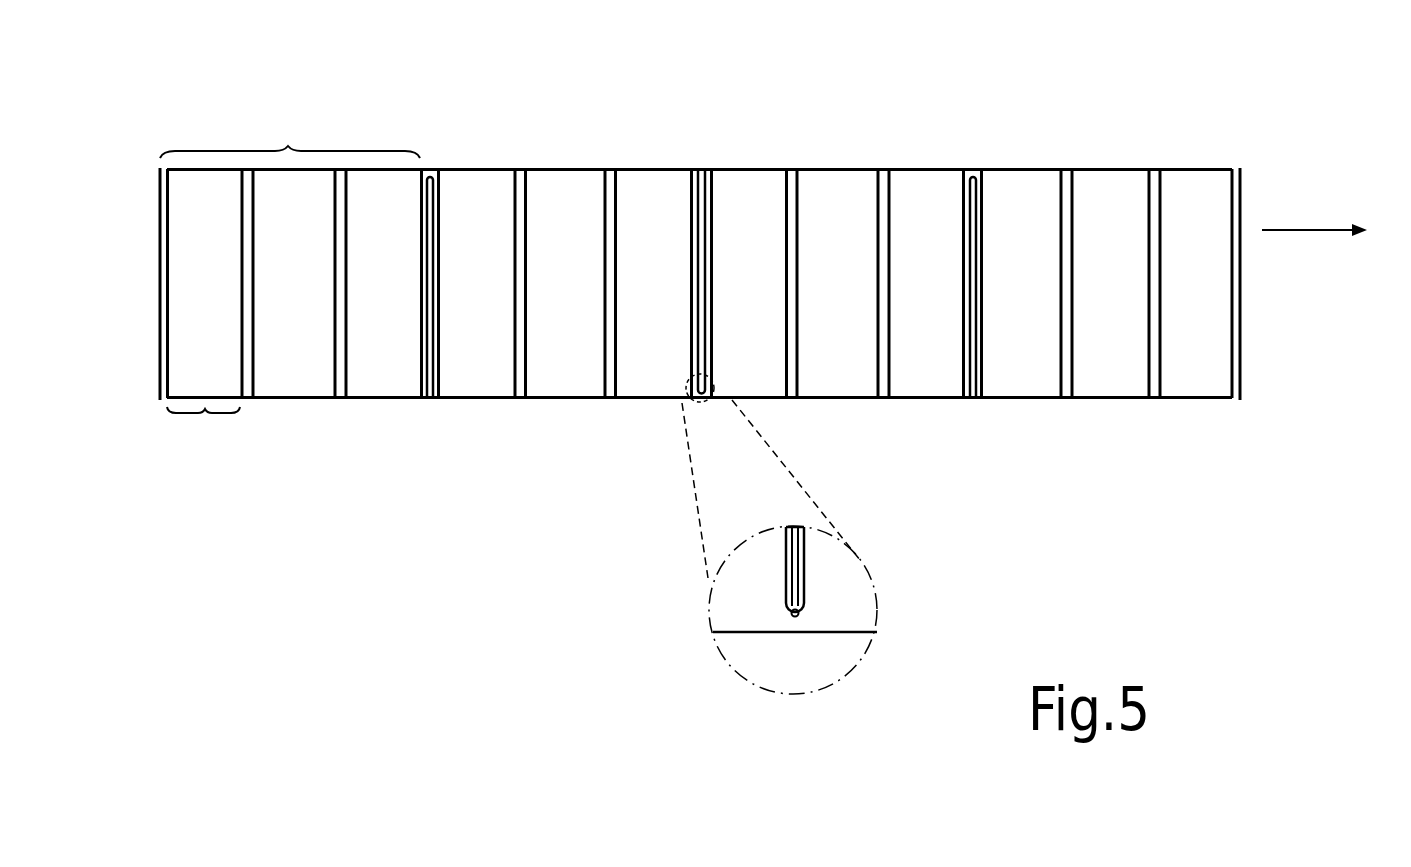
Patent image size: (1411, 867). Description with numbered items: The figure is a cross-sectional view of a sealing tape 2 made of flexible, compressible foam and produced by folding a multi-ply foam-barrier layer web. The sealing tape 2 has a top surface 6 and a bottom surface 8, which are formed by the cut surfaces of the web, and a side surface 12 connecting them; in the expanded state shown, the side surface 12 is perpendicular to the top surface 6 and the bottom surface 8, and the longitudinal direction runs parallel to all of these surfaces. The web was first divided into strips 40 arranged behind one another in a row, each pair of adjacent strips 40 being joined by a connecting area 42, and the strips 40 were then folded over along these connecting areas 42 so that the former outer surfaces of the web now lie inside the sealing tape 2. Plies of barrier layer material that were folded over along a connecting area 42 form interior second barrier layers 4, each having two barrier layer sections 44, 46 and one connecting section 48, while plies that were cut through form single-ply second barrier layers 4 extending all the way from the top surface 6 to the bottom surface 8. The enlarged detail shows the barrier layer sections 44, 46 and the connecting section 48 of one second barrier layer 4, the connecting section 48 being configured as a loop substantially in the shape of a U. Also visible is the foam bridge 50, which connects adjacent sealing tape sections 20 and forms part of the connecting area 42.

The sealing tape 2 is at (1282, 95).
The second barrier layer 4 is at (159, 369).
The top surface 6 is at (1118, 168).
The bottom surface 8 is at (1112, 400).
The side surface 12 is at (829, 332).
The sealing tape section 20 is at (203, 429).
The strip 40 is at (290, 137).
The connecting area 42 is at (703, 404).
The foam bridge 50 is at (703, 404).
The barrier layer section 44 is at (700, 232).
The barrier layer section 46 is at (711, 220).
The connecting section 48 is at (785, 615).